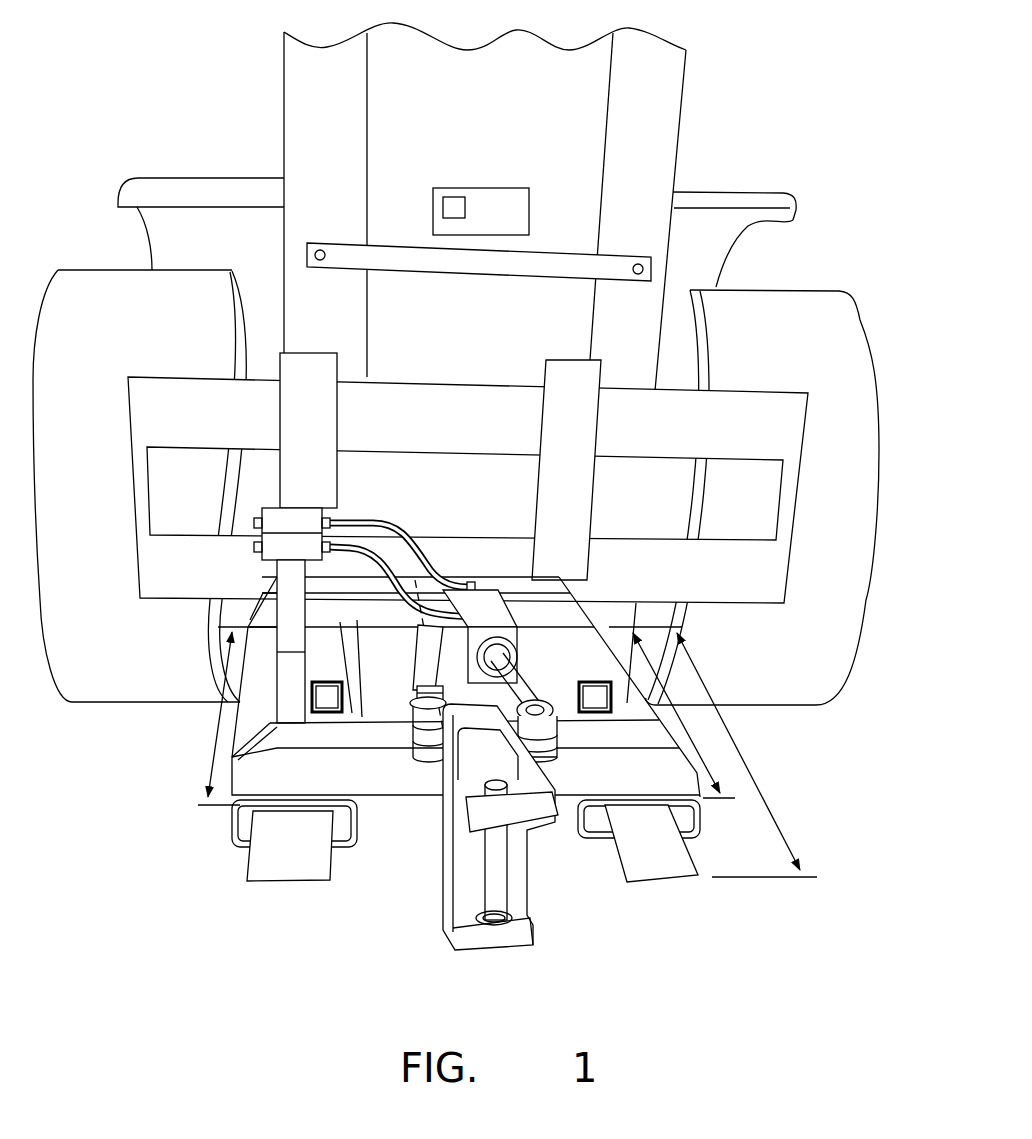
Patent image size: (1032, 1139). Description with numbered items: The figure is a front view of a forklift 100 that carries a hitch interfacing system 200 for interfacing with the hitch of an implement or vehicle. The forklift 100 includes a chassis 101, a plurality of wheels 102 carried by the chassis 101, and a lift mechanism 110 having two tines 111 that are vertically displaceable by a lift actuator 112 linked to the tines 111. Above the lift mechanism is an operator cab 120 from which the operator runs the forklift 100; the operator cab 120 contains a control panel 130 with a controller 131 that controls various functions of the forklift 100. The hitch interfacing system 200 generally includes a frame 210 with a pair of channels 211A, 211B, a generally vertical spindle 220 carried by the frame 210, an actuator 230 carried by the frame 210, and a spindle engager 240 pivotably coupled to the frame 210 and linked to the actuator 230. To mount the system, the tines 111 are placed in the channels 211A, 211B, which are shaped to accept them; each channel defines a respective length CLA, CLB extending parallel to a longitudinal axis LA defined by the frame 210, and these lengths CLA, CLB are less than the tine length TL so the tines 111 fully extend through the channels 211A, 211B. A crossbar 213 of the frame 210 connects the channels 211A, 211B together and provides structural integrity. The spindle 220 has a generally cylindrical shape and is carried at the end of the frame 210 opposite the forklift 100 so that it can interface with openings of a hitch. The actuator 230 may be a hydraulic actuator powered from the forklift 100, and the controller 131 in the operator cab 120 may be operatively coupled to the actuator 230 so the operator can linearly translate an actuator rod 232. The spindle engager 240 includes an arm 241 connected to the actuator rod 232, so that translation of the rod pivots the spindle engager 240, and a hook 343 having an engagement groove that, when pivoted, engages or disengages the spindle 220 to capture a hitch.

The forklift 100 is at (446, 172).
The chassis 101 is at (560, 257).
The wheels 102 is at (476, 514).
The lift mechanism 110 is at (466, 401).
The tines 111 is at (504, 872).
The lift actuator 112 is at (468, 490).
The operator cab 120 is at (521, 363).
The control panel 130 is at (498, 177).
The controller 131 is at (434, 177).
The hitch interfacing system 200 is at (560, 687).
The frame 210 is at (302, 622).
The channel 211A is at (247, 849).
The channel 211B is at (676, 833).
The crossbar 213 is at (414, 705).
The spindle 220 is at (529, 827).
The actuator 230 is at (559, 470).
The actuator rod 232 is at (506, 655).
The spindle engager 240 is at (530, 659).
The arm 241 is at (577, 749).
The hook 343 is at (535, 837).
The channel length CLA is at (178, 718).
The channel length CLB is at (698, 712).
The longitudinal axis LA is at (423, 737).
The tine length TL is at (755, 755).